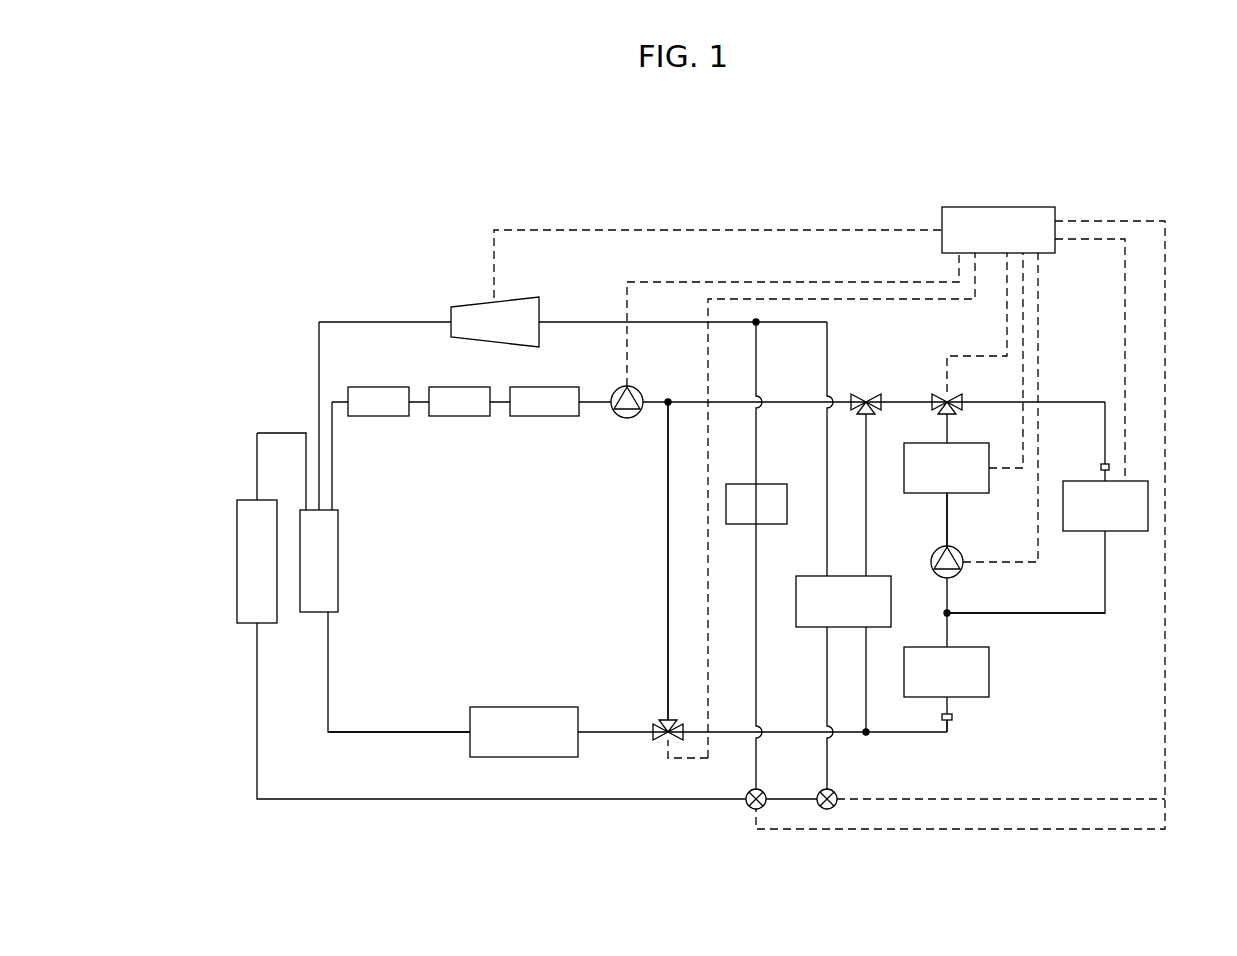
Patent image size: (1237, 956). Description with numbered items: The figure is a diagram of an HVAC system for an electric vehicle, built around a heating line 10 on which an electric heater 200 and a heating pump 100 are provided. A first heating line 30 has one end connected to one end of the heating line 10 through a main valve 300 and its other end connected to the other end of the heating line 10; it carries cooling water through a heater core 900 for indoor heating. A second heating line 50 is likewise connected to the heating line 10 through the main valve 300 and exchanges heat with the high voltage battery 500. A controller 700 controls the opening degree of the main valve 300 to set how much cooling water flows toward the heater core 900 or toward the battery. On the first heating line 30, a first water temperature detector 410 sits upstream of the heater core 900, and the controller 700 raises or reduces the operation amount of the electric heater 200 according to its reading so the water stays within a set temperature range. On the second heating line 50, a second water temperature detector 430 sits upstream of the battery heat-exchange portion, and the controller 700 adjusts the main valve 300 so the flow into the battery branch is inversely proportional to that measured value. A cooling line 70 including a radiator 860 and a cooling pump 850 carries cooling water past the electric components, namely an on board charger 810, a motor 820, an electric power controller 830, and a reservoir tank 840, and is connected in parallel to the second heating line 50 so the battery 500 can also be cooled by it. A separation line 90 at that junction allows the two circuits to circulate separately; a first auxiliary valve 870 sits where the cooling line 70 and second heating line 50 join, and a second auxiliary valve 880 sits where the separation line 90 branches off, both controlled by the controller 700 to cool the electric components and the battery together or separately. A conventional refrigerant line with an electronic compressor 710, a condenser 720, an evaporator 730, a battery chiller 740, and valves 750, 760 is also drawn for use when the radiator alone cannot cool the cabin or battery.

The controller 700 is at (990, 207).
The electronic compressor 710 is at (475, 297).
The on board charger (OBC) 810 is at (378, 416).
The motor 820 is at (458, 416).
The electric power controller (EPCU) 830 is at (540, 416).
The cooling pump 850 is at (627, 418).
The radiator 860 is at (338, 560).
The condenser 720 is at (270, 623).
The cooling line 70 is at (381, 713).
The reservoir tank 840 is at (519, 707).
The second auxiliary valve 880 is at (660, 722).
The separation line 90 is at (660, 600).
The evaporator 730 is at (777, 484).
The battery chiller 740 is at (808, 627).
The valve 750 is at (750, 806).
The valve 760 is at (840, 793).
The first auxiliary valve 870 is at (867, 390).
The main valve 300 is at (942, 392).
The first water temperature detector 410 is at (1100, 464).
The electric heater 200 is at (975, 493).
The heating line 10 is at (928, 510).
The heating pump 100 is at (963, 570).
The heater core 900 is at (1122, 531).
The first heating line 30 is at (1097, 618).
The high voltage battery 500 is at (989, 673).
The second water temperature detector 430 is at (952, 717).
The second heating line 50 is at (943, 737).